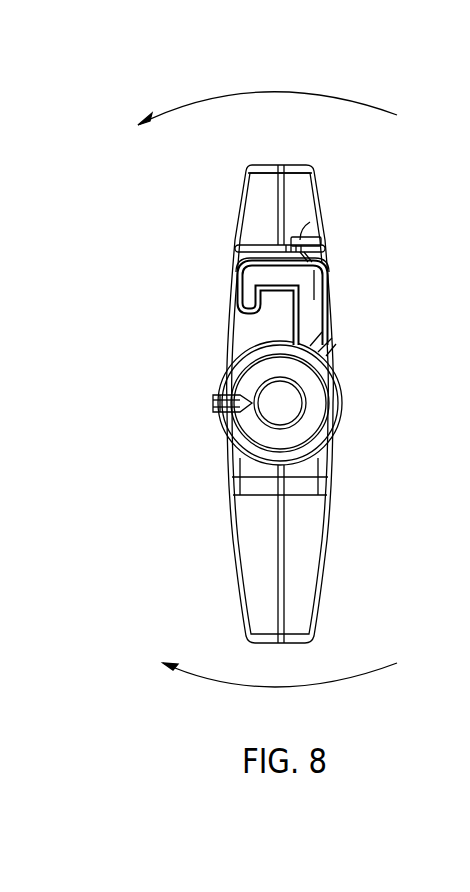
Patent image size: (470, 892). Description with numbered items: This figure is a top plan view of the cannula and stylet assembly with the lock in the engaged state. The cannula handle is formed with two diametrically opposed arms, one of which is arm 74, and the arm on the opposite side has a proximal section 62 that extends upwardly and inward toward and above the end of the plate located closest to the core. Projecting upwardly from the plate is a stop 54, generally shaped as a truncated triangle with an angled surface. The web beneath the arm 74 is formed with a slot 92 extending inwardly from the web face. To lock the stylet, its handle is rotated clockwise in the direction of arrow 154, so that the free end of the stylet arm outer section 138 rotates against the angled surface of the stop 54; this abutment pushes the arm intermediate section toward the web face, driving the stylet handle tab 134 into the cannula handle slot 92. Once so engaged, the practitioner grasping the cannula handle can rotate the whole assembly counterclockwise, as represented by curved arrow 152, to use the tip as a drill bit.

The curved arrow 152 is at (235, 93).
The arm 74 is at (262, 188).
The slot 92 is at (305, 238).
The tab 134 is at (323, 243).
The arm outer section 138 is at (330, 310).
The stop 54 is at (330, 335).
The proximal section 62 is at (250, 593).
The arrow 154 is at (340, 682).